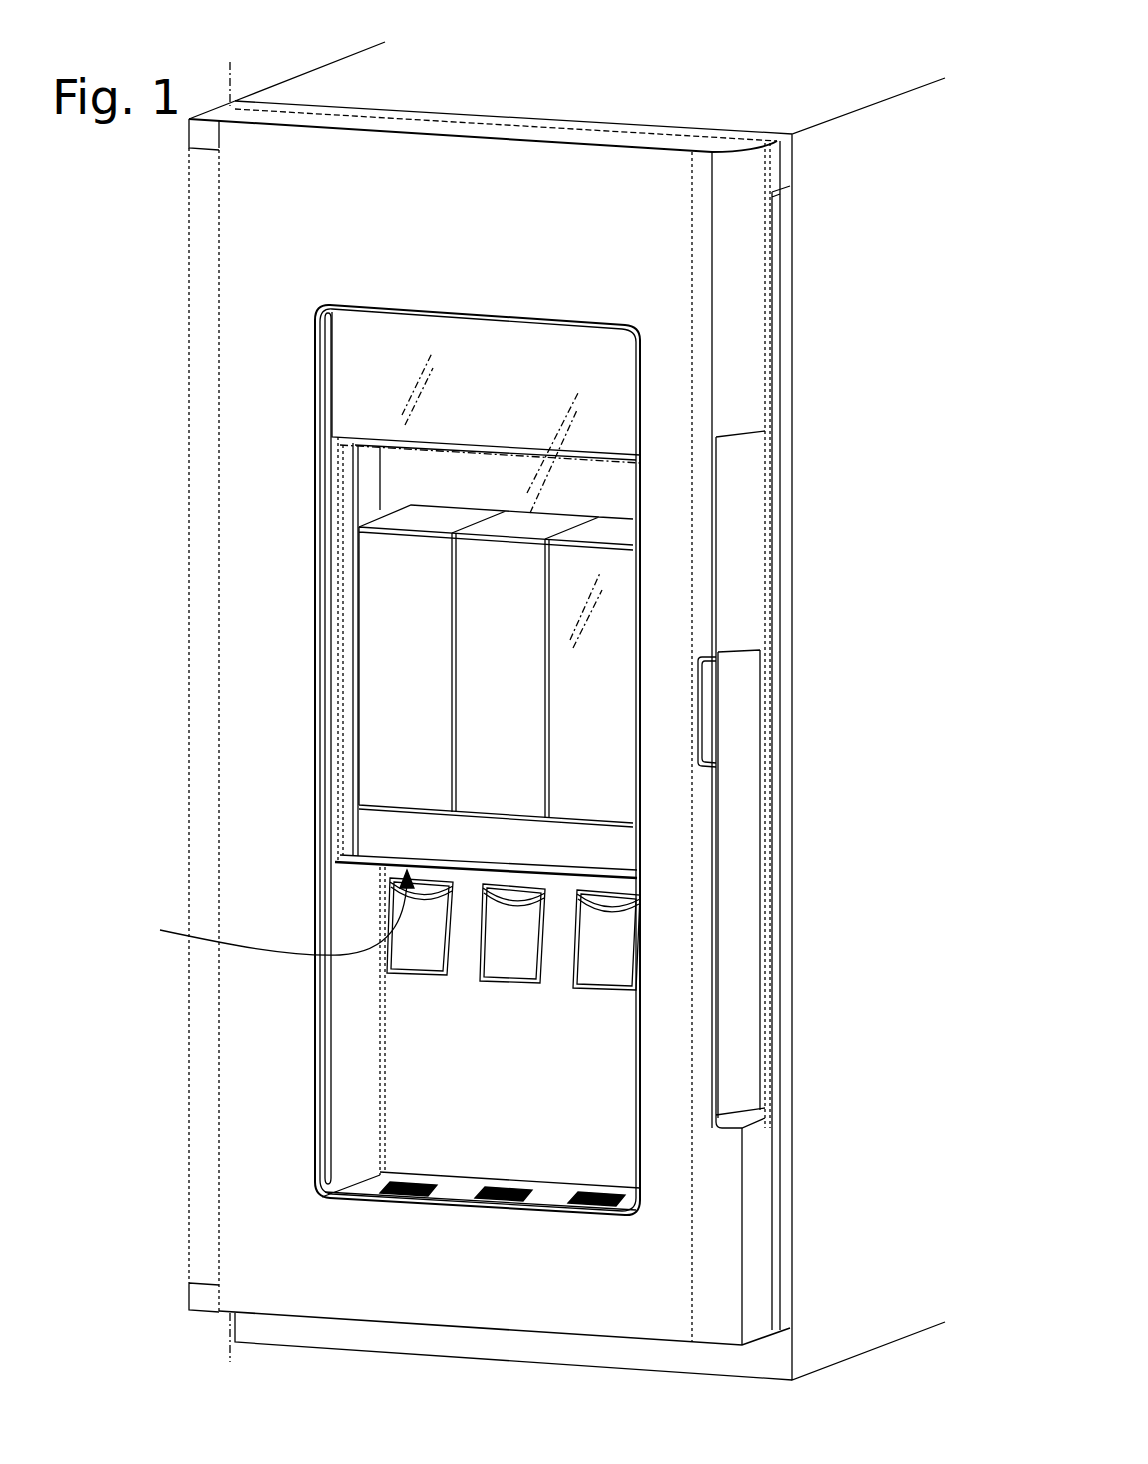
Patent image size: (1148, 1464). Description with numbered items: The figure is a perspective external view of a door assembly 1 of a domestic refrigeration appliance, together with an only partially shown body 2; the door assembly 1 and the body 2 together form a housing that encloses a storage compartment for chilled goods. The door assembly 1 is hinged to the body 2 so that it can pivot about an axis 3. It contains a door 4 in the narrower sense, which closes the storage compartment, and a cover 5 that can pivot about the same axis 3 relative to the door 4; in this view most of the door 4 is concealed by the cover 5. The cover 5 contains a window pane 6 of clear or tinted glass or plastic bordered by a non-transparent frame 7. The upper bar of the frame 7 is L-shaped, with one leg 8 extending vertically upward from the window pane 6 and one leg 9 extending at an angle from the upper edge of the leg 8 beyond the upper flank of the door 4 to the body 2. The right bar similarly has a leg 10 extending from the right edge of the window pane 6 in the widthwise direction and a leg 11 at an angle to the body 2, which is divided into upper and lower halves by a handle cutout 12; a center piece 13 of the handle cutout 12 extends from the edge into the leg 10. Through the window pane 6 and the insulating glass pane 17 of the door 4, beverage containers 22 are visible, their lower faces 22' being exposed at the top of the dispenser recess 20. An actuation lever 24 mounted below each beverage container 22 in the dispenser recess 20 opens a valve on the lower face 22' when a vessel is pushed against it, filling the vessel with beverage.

The door assembly 1 is at (150, 336).
The body 2 is at (868, 219).
The axis 3 is at (232, 80).
The door 4 is at (785, 353).
The cover 5 is at (225, 195).
The window pane 6 is at (355, 405).
The frame 7 is at (260, 458).
The leg 8 is at (397, 198).
The leg 9 is at (440, 123).
The leg 10 is at (660, 455).
The leg 11 is at (727, 397).
The handle cutout 12 is at (752, 993).
The center piece 13 is at (708, 705).
The insulating glass pane 17 is at (370, 475).
The dispenser recess 20 is at (420, 1088).
The beverage containers 22 is at (377, 666).
The lower faces 22' is at (269, 912).
The actuation lever 24 is at (610, 965).